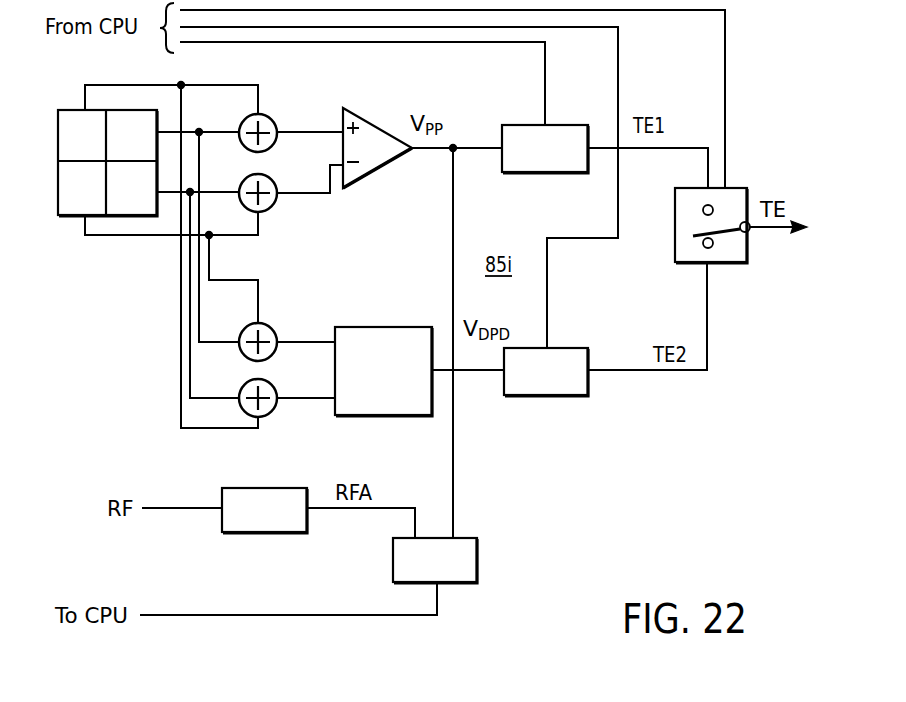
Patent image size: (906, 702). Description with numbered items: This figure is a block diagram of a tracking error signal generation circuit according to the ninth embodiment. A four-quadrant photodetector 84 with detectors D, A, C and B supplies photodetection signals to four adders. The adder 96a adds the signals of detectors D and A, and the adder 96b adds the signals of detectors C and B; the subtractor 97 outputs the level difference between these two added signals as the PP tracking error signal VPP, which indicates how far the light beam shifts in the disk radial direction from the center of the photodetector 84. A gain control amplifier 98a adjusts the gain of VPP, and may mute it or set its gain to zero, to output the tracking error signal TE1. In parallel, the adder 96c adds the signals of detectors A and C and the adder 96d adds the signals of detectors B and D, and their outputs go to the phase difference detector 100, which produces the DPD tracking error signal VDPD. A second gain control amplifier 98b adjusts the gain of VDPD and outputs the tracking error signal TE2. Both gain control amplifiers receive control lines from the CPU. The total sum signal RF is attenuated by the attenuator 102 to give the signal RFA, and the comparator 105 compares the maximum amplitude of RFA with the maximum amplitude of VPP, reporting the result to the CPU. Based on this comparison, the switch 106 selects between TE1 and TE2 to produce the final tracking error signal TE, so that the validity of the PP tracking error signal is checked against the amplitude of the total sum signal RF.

The photodetector 84 is at (59, 231).
The adder 96a is at (272, 121).
The adder 96b is at (273, 206).
The adder 96c is at (272, 330).
The adder 96d is at (297, 376).
The subtractor 97 is at (376, 171).
The gain control amplifier 98a is at (577, 125).
The gain control amplifier 98b is at (568, 348).
The phase difference detector 100 is at (401, 416).
The attenuator 102 is at (281, 533).
The comparator 105 is at (478, 558).
The switch 106 is at (737, 188).